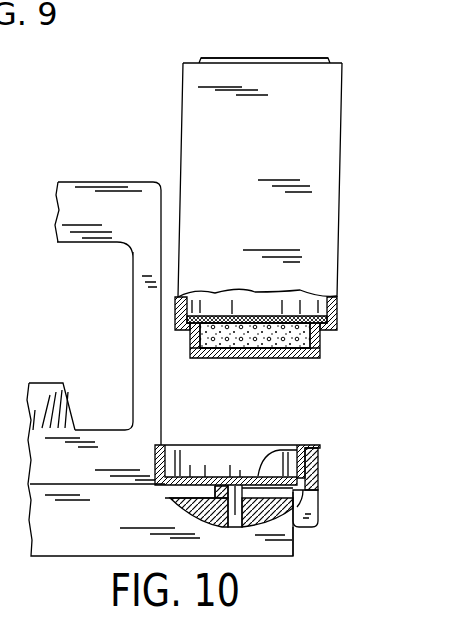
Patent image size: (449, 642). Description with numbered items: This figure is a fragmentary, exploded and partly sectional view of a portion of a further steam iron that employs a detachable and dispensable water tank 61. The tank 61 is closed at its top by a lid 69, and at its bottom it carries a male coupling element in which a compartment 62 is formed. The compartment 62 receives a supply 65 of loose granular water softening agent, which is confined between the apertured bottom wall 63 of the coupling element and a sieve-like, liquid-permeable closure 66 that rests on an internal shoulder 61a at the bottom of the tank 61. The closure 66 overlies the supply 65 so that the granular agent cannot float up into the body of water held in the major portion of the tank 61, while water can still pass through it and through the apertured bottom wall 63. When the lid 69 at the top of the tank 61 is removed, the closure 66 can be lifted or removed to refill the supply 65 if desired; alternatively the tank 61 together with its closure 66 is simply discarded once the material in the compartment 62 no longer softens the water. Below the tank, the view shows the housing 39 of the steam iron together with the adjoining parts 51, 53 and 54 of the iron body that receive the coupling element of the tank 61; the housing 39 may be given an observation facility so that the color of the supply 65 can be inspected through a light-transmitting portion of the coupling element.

The housing 39 is at (318, 498).
The cup 51 is at (186, 452).
The dome-shaped member 53 is at (266, 457).
The lip 54 is at (300, 507).
The water tank 61 is at (347, 193).
The internal shoulder 61a is at (198, 313).
The compartment 62 is at (221, 358).
The apertured bottom wall 63 is at (270, 358).
The supply of loose granular water softening agent 65 is at (322, 349).
The closure 66 is at (283, 318).
The lid 69 is at (265, 58).